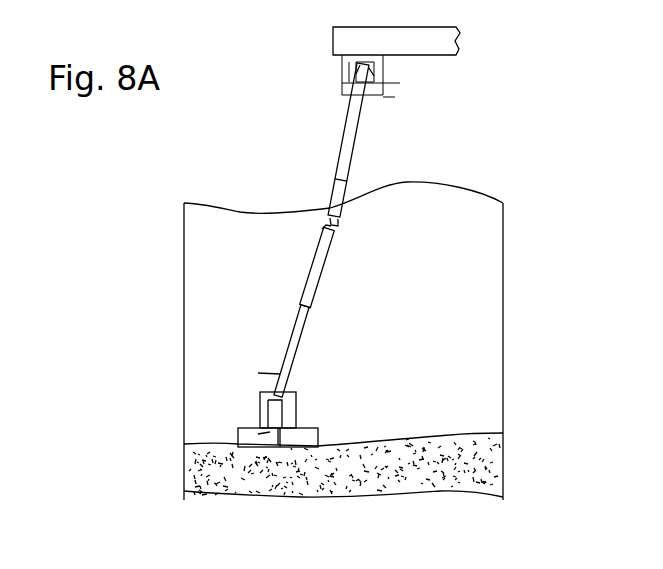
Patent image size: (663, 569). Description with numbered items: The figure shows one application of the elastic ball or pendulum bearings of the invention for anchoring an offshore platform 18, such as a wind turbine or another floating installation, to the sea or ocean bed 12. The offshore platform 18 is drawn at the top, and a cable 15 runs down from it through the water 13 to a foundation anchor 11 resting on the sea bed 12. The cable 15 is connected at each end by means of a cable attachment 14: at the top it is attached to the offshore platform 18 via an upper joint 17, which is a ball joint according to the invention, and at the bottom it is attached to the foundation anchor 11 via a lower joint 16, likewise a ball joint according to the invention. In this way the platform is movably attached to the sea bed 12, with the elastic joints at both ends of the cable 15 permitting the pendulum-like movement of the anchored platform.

The foundation anchor 11 is at (240, 443).
The sea bed 12 is at (503, 438).
The water 13 is at (478, 360).
The cable attachment 14 is at (343, 150).
The cable 15 is at (315, 331).
The joint lower 16 is at (262, 407).
The joint upper 17 is at (394, 97).
The offshore platform 18 is at (337, 44).